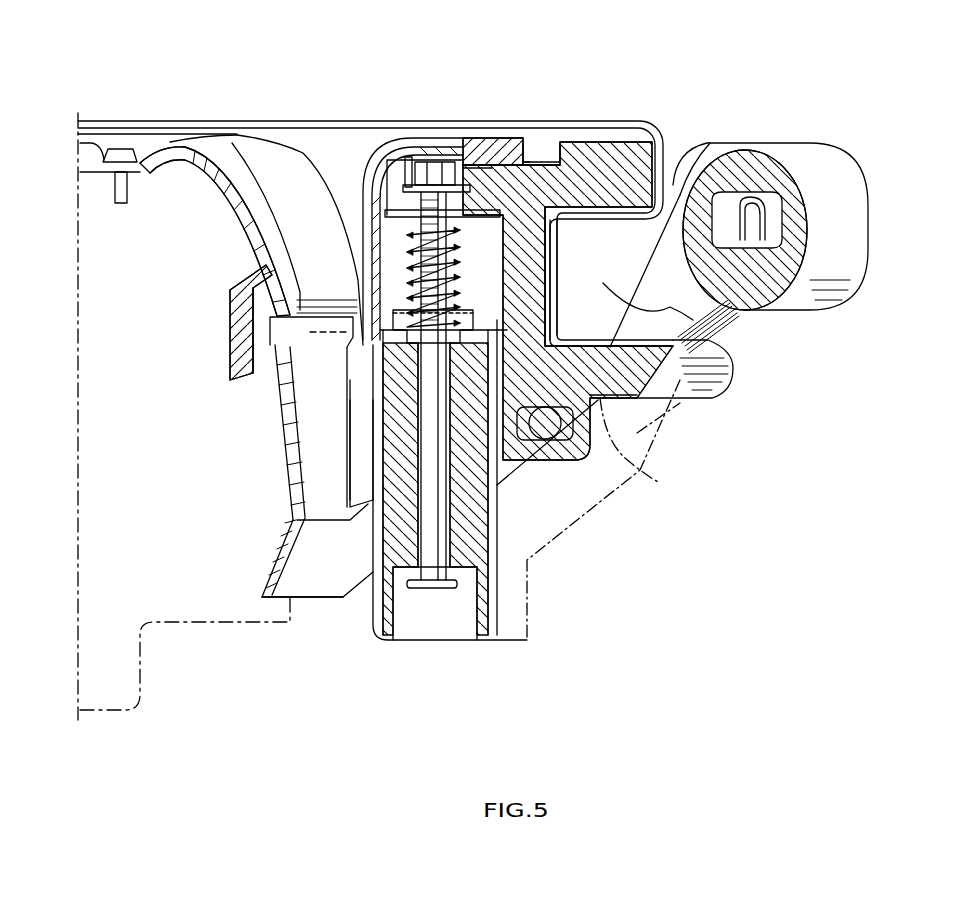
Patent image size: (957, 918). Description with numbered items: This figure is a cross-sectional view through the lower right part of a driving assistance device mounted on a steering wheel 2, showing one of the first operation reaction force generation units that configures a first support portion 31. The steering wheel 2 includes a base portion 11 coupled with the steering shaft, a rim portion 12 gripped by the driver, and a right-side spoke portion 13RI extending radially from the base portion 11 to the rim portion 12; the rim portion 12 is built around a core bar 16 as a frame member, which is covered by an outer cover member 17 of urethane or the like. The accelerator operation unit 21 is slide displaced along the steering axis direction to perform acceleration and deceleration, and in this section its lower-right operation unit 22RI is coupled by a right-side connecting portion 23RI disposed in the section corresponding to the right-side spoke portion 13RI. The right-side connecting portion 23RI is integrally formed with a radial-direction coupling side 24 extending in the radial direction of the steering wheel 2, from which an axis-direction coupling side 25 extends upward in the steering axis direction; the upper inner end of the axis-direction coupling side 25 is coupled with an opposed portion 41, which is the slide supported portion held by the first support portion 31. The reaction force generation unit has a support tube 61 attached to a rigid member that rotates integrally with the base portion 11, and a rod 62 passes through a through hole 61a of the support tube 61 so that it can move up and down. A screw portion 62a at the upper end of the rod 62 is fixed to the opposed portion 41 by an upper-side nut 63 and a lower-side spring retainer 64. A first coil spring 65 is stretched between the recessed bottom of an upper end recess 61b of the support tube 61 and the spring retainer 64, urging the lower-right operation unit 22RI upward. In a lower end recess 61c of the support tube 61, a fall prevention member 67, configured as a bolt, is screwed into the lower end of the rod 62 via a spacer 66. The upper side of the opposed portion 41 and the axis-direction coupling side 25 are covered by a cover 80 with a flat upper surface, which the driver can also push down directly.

The steering wheel 2 is at (878, 225).
The base portion 11 is at (252, 237).
The rim portion 12 is at (776, 142).
The right-side spoke portion 13RI is at (722, 320).
The core bar 16 is at (782, 215).
The outer cover member 17 is at (795, 258).
The accelerator operation unit 21 is at (619, 128).
The lower-right operation unit 22RI is at (546, 150).
The right-side connecting portion 23RI is at (726, 380).
The radial-direction coupling side 24 is at (627, 470).
The axis-direction coupling side 25 is at (560, 252).
The first support portion 31 is at (371, 433).
The opposed portion 41 is at (486, 137).
The support tube 61 is at (495, 500).
The through hole 61a is at (382, 520).
The upper end recess 61b is at (390, 372).
The lower end recess 61c is at (440, 576).
The rod 62 is at (440, 468).
The screw portion 62a is at (378, 198).
The upper-side nut 63 is at (407, 150).
The lower-side spring retainer 64 is at (373, 233).
The first coil spring 65 is at (407, 278).
The spacer 66 is at (450, 583).
The fall prevention member 67 is at (435, 600).
The cover 80 is at (439, 140).